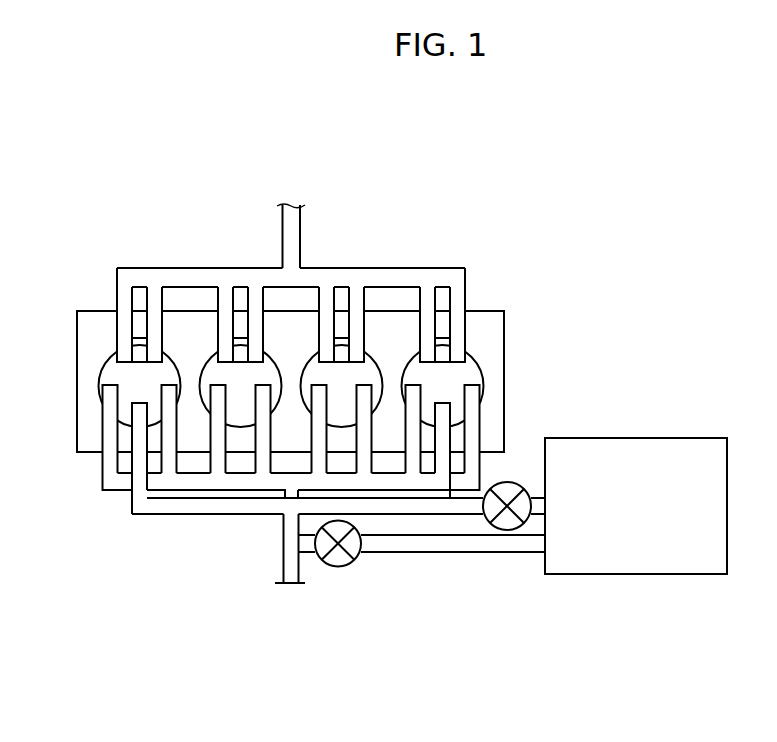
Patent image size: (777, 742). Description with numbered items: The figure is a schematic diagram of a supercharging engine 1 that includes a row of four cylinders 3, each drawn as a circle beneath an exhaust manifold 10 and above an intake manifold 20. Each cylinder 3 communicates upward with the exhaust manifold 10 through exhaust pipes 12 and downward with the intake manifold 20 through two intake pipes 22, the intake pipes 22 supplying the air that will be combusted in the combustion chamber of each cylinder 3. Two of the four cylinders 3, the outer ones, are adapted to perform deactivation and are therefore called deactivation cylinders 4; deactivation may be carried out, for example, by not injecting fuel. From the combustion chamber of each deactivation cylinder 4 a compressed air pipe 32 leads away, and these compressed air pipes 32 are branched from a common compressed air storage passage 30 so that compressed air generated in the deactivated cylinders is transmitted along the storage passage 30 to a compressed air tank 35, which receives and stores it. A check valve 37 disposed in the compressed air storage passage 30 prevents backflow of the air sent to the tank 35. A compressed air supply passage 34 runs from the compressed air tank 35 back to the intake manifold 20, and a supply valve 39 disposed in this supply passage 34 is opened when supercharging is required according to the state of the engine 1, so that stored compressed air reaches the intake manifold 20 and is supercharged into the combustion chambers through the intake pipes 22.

The supercharging engine 1 is at (172, 240).
The cylinder 3 is at (204, 358).
The deactivation cylinder 4 is at (316, 306).
The exhaust manifold 10 is at (292, 243).
The exhaust pipe 12 is at (432, 301).
The intake manifold 20 is at (290, 528).
The intake pipe 22 is at (165, 395).
The compressed air storage passage 30 is at (412, 508).
The compressed air pipe 32 is at (138, 434).
The compressed air supply passage 34 is at (473, 553).
The compressed air tank 35 is at (635, 575).
The check valve 37 is at (512, 482).
The supply valve 39 is at (337, 567).